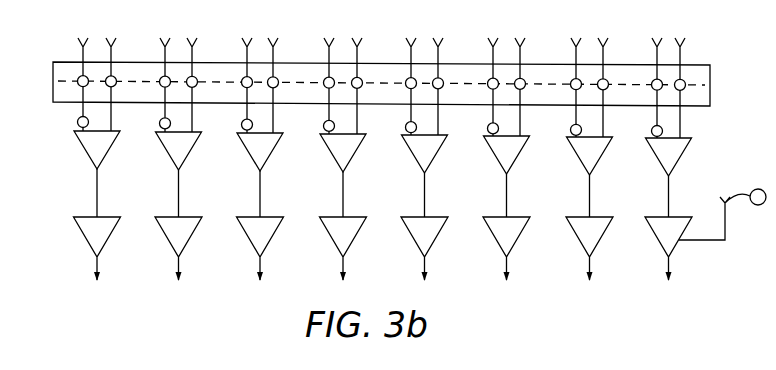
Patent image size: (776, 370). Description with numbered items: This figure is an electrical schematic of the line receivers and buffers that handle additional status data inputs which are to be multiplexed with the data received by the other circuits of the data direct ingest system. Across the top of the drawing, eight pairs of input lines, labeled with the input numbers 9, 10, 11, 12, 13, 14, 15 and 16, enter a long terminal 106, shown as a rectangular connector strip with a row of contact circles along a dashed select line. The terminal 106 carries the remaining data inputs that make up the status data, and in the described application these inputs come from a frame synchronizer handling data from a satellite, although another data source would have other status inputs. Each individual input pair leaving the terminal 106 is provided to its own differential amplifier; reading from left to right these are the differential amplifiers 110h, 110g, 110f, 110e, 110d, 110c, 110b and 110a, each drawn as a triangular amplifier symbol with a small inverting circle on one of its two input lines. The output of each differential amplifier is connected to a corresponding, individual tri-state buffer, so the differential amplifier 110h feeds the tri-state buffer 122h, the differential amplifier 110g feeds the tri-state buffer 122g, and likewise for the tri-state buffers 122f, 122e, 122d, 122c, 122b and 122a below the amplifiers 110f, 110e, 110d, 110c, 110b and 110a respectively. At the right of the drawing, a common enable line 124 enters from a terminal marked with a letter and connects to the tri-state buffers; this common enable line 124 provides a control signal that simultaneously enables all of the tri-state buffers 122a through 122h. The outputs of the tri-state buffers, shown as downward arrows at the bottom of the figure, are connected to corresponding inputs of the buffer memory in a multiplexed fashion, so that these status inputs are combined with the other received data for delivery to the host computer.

The input signal pair 9 is at (97, 40).
The input signal pair 10 is at (178, 41).
The input signal pair 11 is at (260, 41).
The input signal pair 12 is at (343, 41).
The input signal pair 13 is at (424, 41).
The input signal pair 14 is at (506, 41).
The input signal pair 15 is at (589, 42).
The input signal pair 16 is at (668, 42).
The terminal 106 is at (710, 65).
The differential amplifier 110a is at (674, 168).
The differential amplifier 110b is at (594, 167).
The differential amplifier 110c is at (512, 166).
The differential amplifier 110d is at (430, 165).
The differential amplifier 110e is at (348, 164).
The differential amplifier 110f is at (265, 163).
The differential amplifier 110g is at (184, 162).
The differential amplifier 110h is at (102, 161).
The tri-state buffer 122a is at (672, 250).
The tri-state buffer 122b is at (594, 250).
The tri-state buffer 122c is at (510, 250).
The tri-state buffer 122d is at (428, 250).
The tri-state buffer 122e is at (347, 250).
The tri-state buffer 122f is at (264, 250).
The tri-state buffer 122g is at (182, 250).
The tri-state buffer 122h is at (101, 250).
The common enable line 124 is at (725, 224).